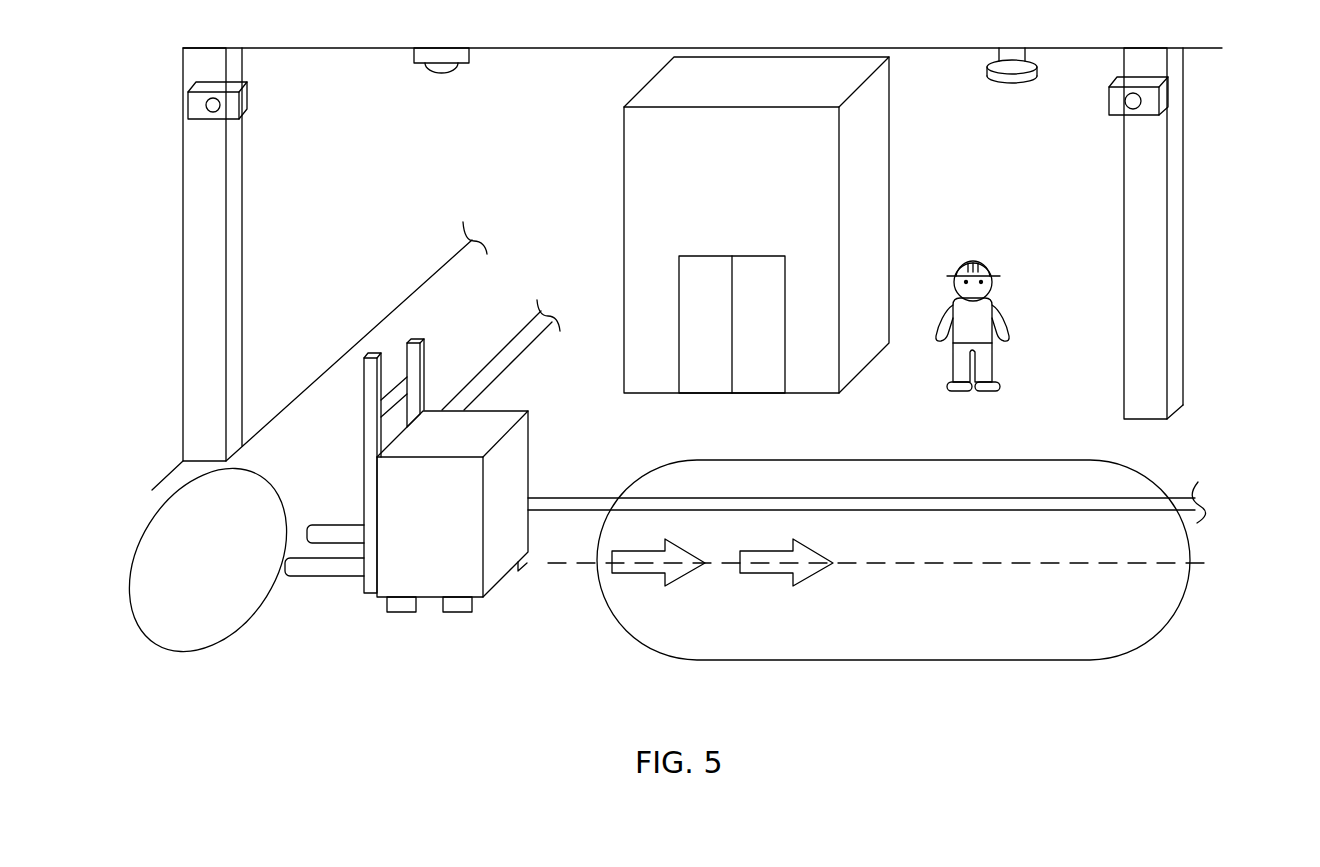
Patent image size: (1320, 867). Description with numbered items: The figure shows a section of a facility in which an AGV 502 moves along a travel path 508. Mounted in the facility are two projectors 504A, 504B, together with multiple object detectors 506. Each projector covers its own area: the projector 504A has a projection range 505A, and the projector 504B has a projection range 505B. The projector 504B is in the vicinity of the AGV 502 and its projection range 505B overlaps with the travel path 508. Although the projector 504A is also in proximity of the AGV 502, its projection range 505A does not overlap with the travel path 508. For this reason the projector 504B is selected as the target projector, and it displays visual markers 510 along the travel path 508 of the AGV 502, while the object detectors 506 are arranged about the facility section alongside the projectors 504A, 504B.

The AGV 502 is at (522, 468).
The projector 504A is at (242, 103).
The projector 504B is at (1163, 98).
The projection range 505A is at (250, 618).
The projection range 505B is at (1022, 460).
The object detector 506 is at (442, 75).
The travel path 508 is at (932, 563).
The visual marker 510 is at (658, 575).